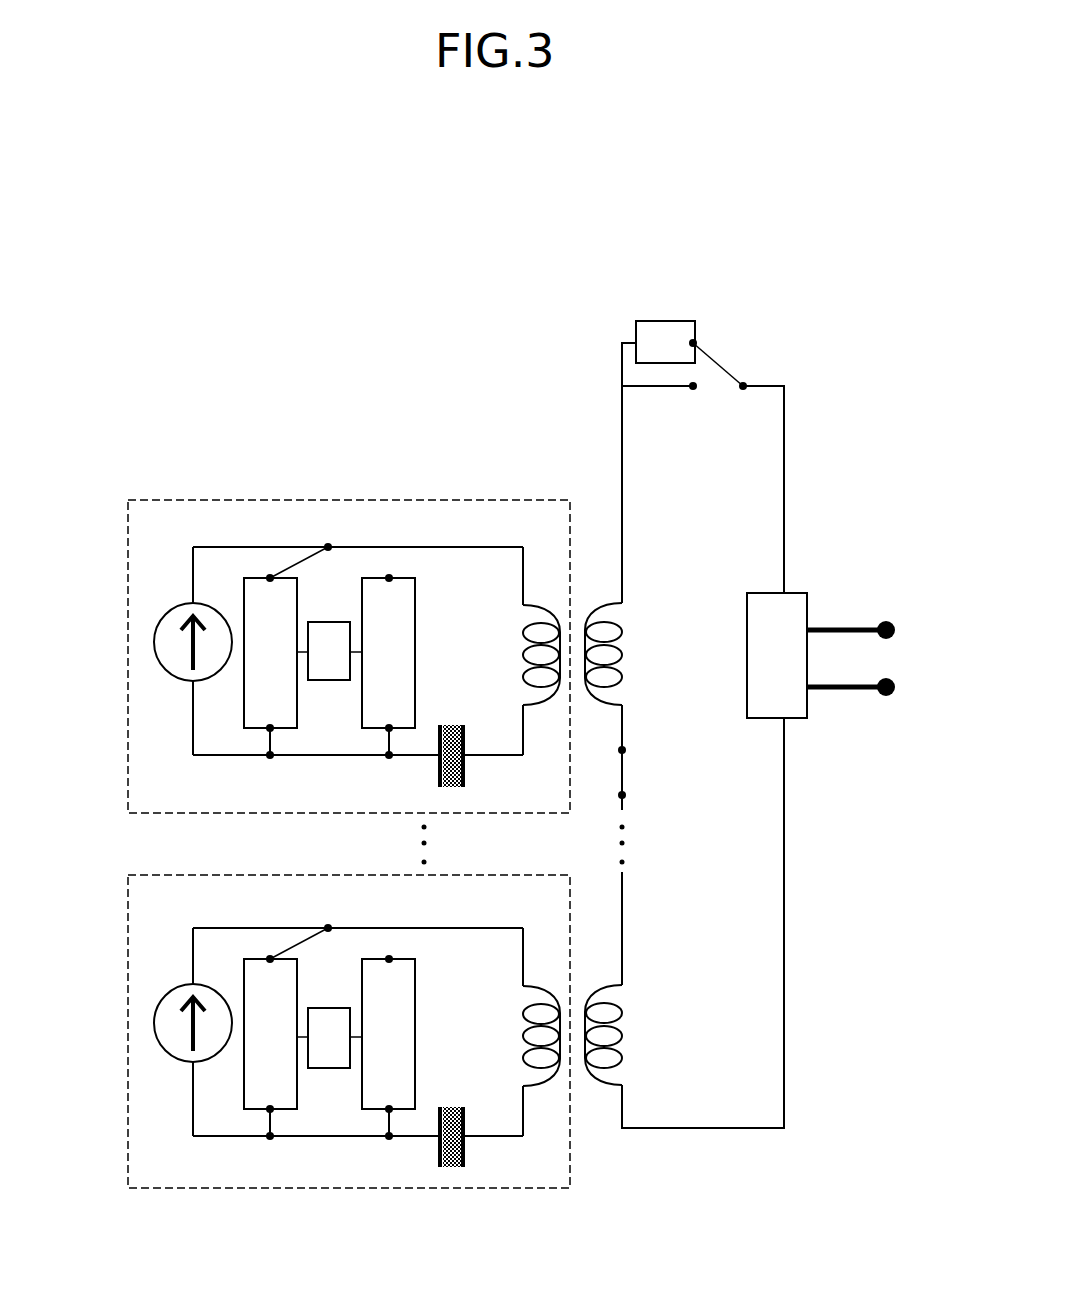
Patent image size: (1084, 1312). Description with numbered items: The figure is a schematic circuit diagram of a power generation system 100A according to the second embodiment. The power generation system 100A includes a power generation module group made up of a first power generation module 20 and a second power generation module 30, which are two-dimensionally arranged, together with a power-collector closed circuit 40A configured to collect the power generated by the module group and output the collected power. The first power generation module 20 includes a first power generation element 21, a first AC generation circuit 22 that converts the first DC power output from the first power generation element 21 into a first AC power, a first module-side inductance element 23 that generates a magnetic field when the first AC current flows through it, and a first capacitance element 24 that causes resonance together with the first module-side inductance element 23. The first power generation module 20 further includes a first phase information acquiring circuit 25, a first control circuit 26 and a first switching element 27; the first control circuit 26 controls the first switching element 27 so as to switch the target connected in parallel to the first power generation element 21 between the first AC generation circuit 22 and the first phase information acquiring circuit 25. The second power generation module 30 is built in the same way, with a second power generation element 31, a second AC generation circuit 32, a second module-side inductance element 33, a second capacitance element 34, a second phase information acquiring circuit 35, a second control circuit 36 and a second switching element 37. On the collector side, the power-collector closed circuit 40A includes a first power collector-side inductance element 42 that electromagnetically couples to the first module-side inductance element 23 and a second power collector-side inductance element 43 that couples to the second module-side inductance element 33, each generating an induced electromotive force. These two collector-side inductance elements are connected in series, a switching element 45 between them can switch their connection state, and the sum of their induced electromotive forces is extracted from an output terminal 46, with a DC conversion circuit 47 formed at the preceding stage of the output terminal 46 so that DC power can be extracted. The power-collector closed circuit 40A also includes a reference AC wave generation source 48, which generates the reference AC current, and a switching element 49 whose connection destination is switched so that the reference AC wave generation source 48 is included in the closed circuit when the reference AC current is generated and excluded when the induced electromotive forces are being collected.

The power generation system 100A is at (797, 236).
The first power generation module 20 is at (128, 580).
The first power generation element 21 is at (153, 650).
The first AC generation circuit 22 is at (270, 666).
The first module-side inductance element 23 is at (521, 655).
The first capacitance element 24 is at (465, 745).
The first phase information acquiring circuit 25 is at (388, 666).
The first control circuit 26 is at (329, 651).
The first switching element 27 is at (297, 562).
The second power generation module 30 is at (128, 970).
The second power generation element 31 is at (153, 1040).
The second AC generation circuit 32 is at (270, 1047).
The second module-side inductance element 33 is at (521, 1052).
The second capacitance element 34 is at (465, 1126).
The second phase information acquiring circuit 35 is at (388, 1047).
The second control circuit 36 is at (329, 1038).
The second switching element 37 is at (297, 944).
The power-collector closed circuit 40A is at (784, 436).
The first power collector-side inductance element 42 is at (635, 647).
The second power collector-side inductance element 43 is at (635, 1040).
The switching element 45 is at (622, 778).
The output terminal 46 is at (911, 602).
The DC conversion circuit 47 is at (798, 710).
The reference AC wave generation source 48 is at (665, 342).
The switching element 49 is at (723, 360).